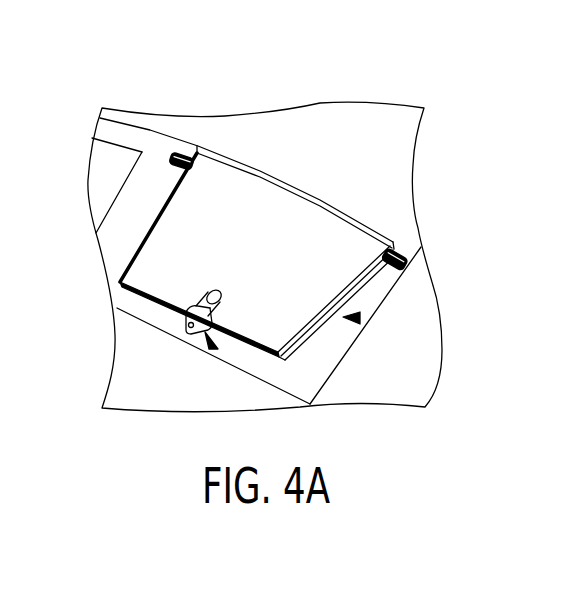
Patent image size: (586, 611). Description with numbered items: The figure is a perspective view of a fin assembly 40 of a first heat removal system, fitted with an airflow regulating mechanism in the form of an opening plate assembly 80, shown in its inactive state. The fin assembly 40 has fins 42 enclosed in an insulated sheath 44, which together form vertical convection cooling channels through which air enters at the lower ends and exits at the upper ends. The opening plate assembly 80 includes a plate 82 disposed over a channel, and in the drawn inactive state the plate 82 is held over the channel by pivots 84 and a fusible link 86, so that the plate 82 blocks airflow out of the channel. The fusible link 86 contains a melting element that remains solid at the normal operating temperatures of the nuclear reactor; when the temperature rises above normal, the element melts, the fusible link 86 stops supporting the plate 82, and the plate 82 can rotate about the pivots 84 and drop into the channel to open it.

The fin assembly 40 is at (120, 70).
The insulated sheath 44 is at (278, 173).
The fins 42 is at (370, 283).
The plate 82 is at (317, 218).
The pivots 84 is at (180, 154).
The fusible link 86 is at (212, 352).
The opening plate assembly 80 is at (360, 319).